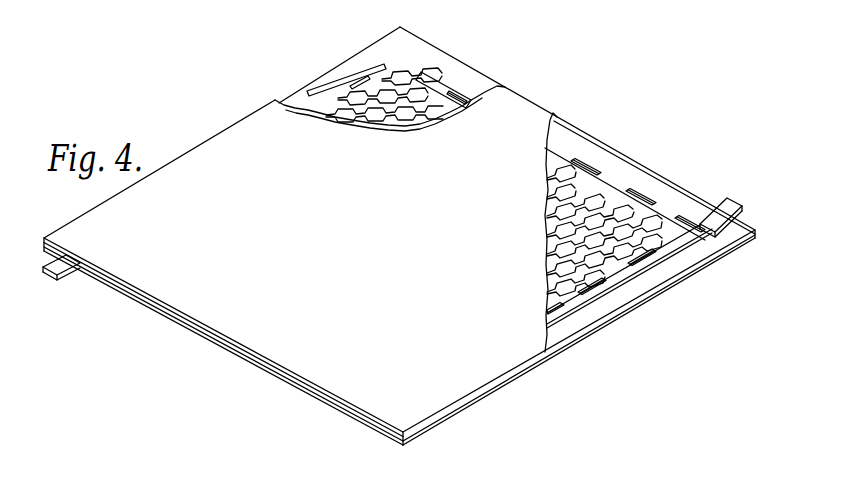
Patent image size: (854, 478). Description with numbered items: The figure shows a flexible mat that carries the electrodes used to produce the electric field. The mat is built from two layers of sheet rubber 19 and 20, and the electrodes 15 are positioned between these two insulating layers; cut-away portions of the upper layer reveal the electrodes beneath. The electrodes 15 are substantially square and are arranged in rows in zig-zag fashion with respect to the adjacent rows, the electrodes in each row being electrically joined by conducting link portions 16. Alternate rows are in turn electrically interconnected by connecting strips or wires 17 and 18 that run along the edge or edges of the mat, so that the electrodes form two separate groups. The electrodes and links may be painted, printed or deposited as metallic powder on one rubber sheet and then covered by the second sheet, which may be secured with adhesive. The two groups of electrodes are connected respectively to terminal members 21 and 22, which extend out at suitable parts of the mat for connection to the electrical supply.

The electrodes 15 is at (405, 77).
The conducting link portions 16 is at (403, 99).
The connecting strips or wires 17 is at (455, 88).
The connecting strips or wires 18 is at (312, 98).
The layer of sheet rubber 19 is at (540, 353).
The layer of sheet rubber 20 is at (719, 248).
The terminal member 21 is at (730, 200).
The terminal member 22 is at (62, 268).